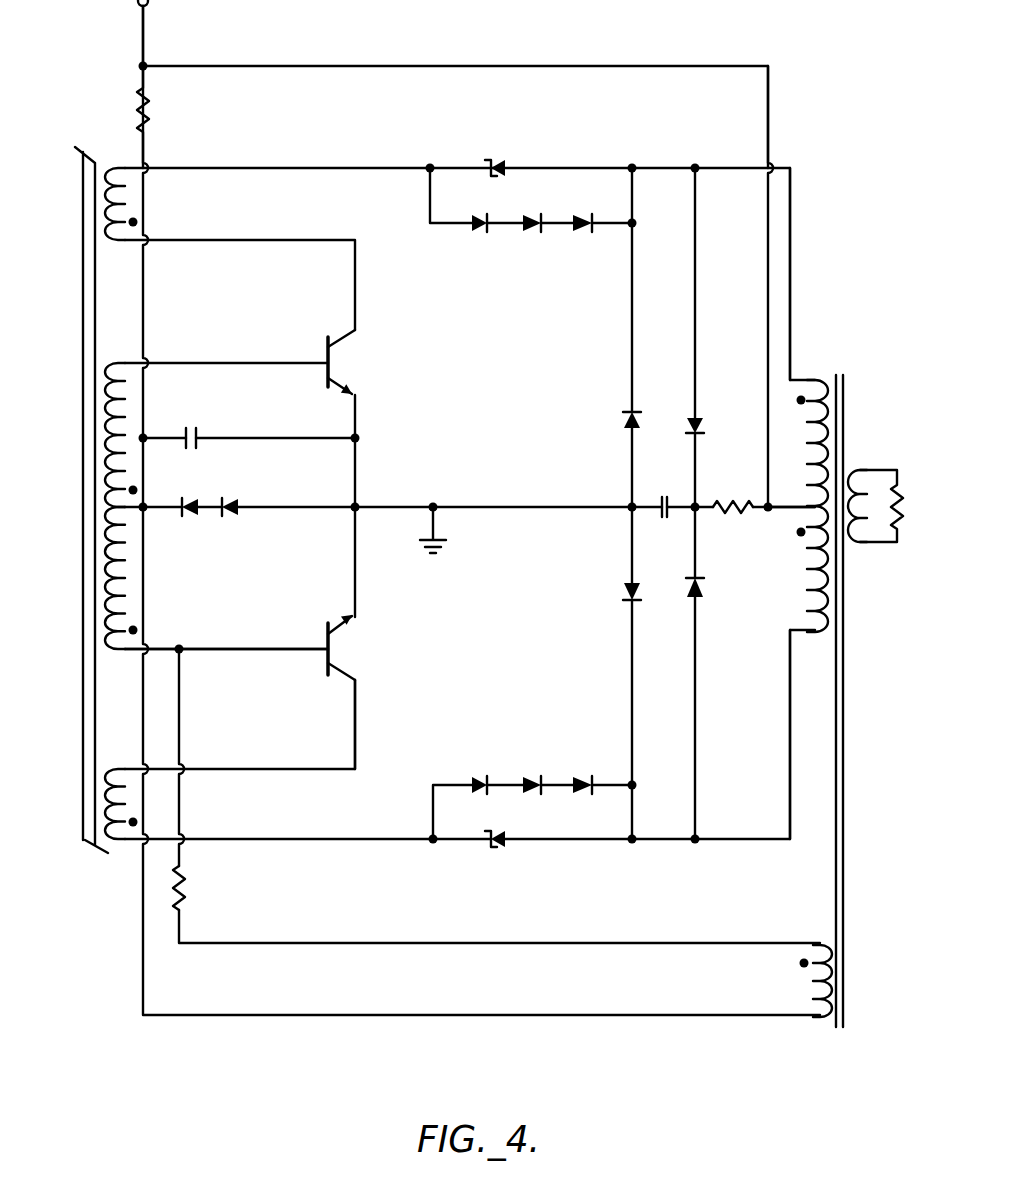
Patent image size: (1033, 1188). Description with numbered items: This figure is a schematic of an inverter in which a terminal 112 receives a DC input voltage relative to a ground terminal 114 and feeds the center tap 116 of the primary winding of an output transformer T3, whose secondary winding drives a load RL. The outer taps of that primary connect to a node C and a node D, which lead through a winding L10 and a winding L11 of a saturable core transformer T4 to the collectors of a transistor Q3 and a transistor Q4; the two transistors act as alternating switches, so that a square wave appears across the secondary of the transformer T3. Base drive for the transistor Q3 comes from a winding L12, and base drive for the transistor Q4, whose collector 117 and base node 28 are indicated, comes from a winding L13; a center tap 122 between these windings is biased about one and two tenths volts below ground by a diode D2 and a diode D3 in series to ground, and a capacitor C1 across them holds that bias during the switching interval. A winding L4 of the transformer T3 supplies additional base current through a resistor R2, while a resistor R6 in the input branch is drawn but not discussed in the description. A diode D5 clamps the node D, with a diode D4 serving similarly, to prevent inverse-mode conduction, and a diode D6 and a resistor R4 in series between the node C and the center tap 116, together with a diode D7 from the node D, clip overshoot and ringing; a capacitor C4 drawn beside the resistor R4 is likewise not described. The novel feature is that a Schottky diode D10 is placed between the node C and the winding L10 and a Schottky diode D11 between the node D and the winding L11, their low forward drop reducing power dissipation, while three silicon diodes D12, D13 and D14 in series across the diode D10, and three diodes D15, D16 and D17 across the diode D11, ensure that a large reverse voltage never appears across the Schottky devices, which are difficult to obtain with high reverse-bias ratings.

The terminal 112 is at (145, 22).
The resistor R6 is at (150, 110).
The saturable core transformer T4 is at (85, 702).
The winding L10 is at (105, 195).
The winding L12 is at (110, 389).
The center tap 122 is at (118, 503).
The winding L13 is at (110, 600).
The winding L11 is at (110, 791).
The resistor R2 is at (185, 890).
The transistor Q3 is at (345, 358).
The capacitor C1 is at (189, 427).
The diode D2 is at (187, 498).
The diode D3 is at (230, 498).
The node 28 is at (303, 650).
The transistor Q4 is at (343, 656).
The collector 117 is at (357, 725).
The ground terminal 114 is at (436, 518).
The Schottky diode D10 is at (497, 163).
The diode D12 is at (480, 232).
The diode D13 is at (533, 231).
The diode D14 is at (582, 232).
The diode D4 is at (634, 411).
The diode D6 is at (696, 410).
The diode D5 is at (634, 581).
The diode D7 is at (700, 578).
The capacitor C4 is at (655, 493).
The resistor R4 is at (722, 495).
The node C is at (792, 166).
The node D is at (792, 841).
The output transformer T3 is at (848, 727).
The center tap 116 is at (813, 512).
The load RL is at (903, 507).
The winding L4 is at (828, 984).
The diode D15 is at (479, 777).
The diode D16 is at (531, 777).
The diode D17 is at (581, 777).
The Schottky diode D11 is at (507, 848).